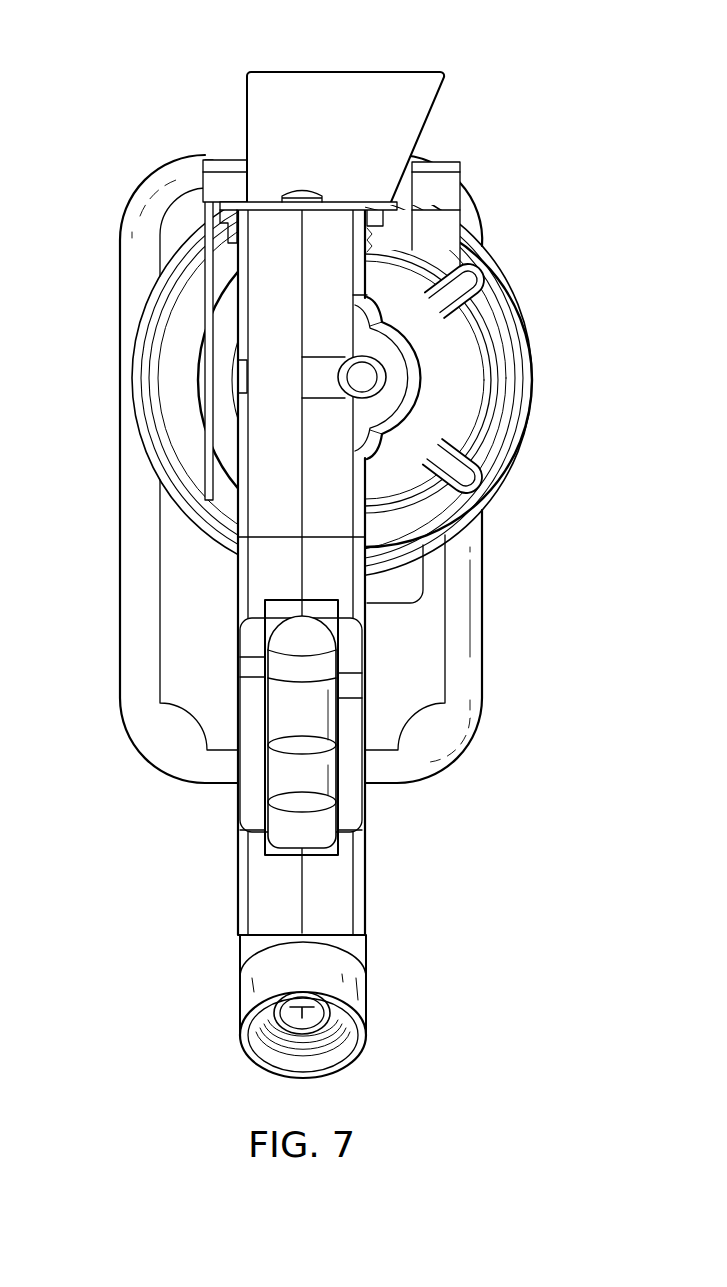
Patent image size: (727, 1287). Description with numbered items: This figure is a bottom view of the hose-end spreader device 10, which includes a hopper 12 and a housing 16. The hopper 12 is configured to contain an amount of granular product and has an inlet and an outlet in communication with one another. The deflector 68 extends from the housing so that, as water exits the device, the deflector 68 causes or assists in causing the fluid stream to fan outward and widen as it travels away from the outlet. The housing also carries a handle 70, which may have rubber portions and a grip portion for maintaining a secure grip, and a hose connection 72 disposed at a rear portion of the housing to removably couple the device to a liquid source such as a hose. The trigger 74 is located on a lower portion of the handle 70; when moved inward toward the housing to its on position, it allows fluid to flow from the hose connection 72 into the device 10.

The hose-end spreader device 10 is at (70, 64).
The hopper 12 is at (120, 677).
The housing 16 is at (425, 381).
The deflector 68 is at (246, 106).
The handle 70 is at (238, 878).
The hose connection 72 is at (276, 1058).
The trigger 74 is at (340, 698).